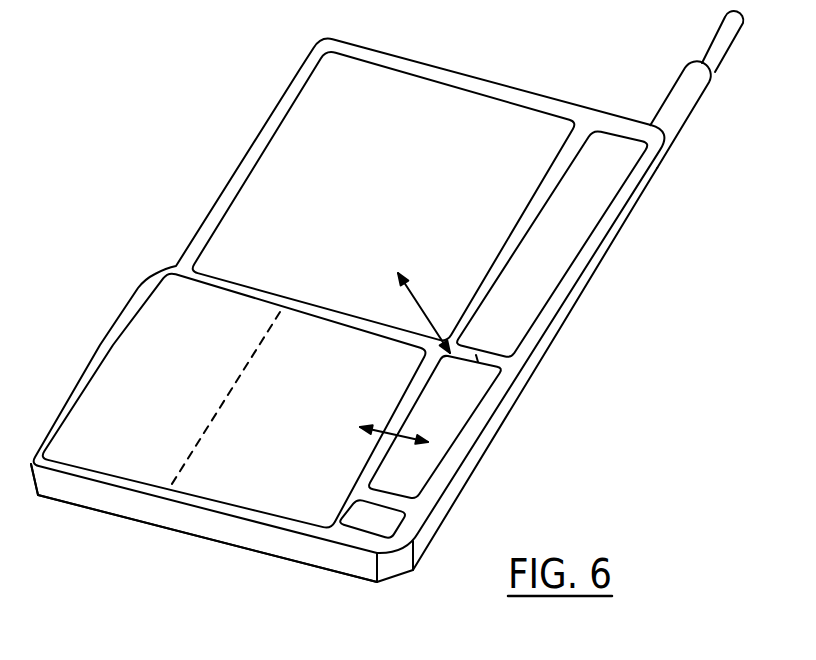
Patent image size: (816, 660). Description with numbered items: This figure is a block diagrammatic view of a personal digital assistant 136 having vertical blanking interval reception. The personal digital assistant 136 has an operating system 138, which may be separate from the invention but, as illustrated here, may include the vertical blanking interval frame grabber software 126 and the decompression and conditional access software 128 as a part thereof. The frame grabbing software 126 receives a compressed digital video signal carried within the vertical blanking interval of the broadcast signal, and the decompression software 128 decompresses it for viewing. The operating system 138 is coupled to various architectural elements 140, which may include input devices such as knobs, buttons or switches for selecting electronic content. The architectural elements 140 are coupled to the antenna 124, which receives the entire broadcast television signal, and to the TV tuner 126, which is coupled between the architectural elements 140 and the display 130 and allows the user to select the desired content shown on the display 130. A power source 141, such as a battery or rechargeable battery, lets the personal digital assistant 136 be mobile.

The antenna 124 is at (689, 68).
The vertical blanking interval frame grabbing software 126 is at (619, 132).
The decompression software 128 is at (127, 481).
The output device 130 is at (452, 83).
The personal digital assistant 136 is at (592, 277).
The operating system 138 is at (268, 518).
The architectural elements 140 is at (482, 416).
The power source 141 is at (420, 526).